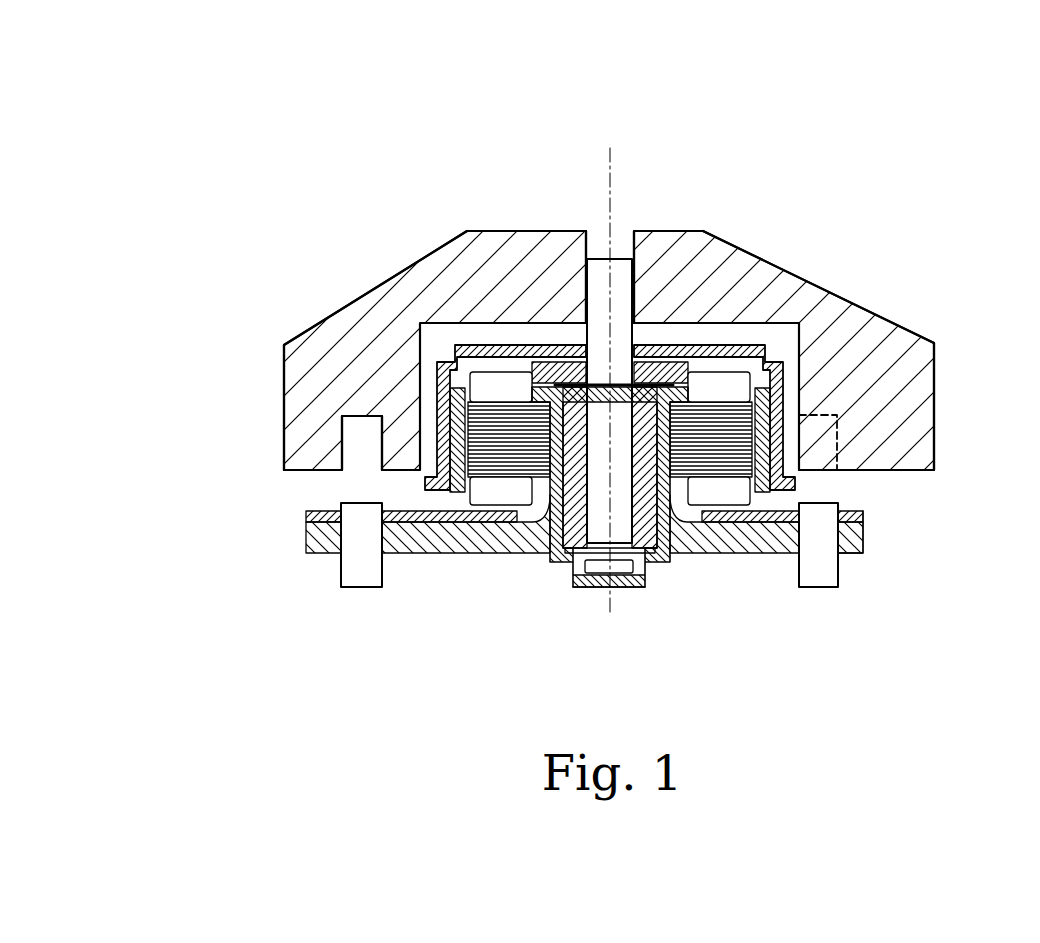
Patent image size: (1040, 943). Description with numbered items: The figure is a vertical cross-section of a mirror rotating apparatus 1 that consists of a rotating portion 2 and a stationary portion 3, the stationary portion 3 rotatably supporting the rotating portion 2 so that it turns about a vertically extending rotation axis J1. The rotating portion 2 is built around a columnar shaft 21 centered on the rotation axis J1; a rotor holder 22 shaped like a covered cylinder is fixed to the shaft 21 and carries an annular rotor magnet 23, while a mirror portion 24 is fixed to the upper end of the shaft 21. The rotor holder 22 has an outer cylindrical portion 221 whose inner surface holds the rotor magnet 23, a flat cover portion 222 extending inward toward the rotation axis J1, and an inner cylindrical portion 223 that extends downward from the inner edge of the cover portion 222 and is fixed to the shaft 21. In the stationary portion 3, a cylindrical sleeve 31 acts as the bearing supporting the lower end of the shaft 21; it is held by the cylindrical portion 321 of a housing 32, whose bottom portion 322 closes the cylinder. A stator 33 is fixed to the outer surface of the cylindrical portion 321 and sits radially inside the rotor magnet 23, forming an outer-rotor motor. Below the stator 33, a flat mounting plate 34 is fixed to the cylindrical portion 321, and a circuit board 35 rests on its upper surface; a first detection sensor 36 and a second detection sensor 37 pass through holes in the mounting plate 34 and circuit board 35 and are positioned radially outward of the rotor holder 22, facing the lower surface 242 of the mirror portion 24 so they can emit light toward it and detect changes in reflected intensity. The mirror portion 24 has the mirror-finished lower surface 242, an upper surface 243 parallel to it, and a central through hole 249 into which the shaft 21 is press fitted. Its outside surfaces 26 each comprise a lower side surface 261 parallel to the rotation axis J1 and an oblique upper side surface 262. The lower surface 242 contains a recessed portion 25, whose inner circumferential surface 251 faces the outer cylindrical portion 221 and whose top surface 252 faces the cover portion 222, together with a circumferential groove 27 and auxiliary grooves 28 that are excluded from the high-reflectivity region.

The mirror rotating apparatus 1 is at (755, 140).
The rotating portion 2 is at (205, 195).
The shaft 21 is at (622, 277).
The rotor holder 22 is at (290, 262).
The outer cylindrical portion 221 is at (438, 392).
The cover portion 222 is at (482, 347).
The inner cylindrical portion 223 is at (475, 257).
The rotor magnet 23 is at (437, 427).
The mirror portion 24 is at (555, 353).
The lower surface 242 is at (358, 455).
The upper surface 243 is at (540, 230).
The through hole 249 is at (596, 244).
The recessed portion 25 is at (777, 343).
The inner circumferential surface 251 is at (786, 421).
The top surface 252 is at (700, 335).
The outside surface 26 is at (323, 205).
The lower side surface 261 is at (282, 410).
The upper side surface 262 is at (420, 253).
The groove 27 is at (303, 472).
The auxiliary groove 28 is at (815, 457).
The stationary portion 3 is at (758, 620).
The sleeve 31 is at (668, 558).
The housing 32 is at (500, 613).
The cylindrical portion 321 is at (540, 549).
The bottom portion 322 is at (590, 588).
The stator 33 is at (738, 540).
The mounting plate 34 is at (866, 540).
The circuit board 35 is at (839, 532).
The first detection sensor 36 is at (359, 577).
The second detection sensor 37 is at (820, 577).
The rotation axis J1 is at (612, 167).